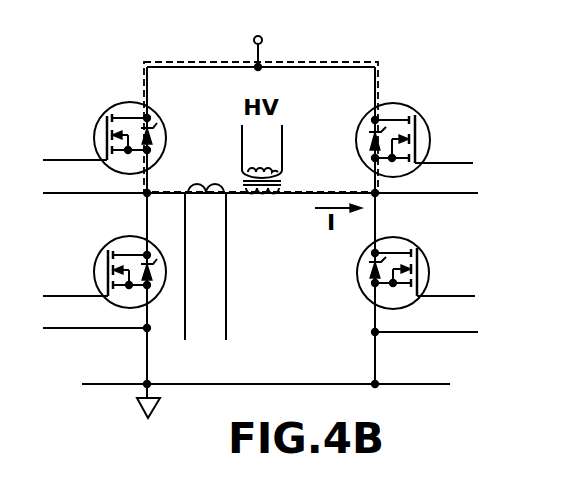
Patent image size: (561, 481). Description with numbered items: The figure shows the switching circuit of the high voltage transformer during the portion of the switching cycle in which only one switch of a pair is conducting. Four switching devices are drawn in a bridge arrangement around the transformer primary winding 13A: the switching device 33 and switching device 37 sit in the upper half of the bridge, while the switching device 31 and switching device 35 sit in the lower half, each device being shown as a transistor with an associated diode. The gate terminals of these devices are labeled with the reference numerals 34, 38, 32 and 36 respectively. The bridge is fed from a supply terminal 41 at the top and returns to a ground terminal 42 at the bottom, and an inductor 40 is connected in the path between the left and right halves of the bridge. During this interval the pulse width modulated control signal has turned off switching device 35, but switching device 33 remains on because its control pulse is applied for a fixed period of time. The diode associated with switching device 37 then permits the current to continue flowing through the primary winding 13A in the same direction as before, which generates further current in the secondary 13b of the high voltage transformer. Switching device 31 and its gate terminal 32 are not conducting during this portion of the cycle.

The lower left switching transistor 31 is at (130, 258).
The gate terminal of transistor 31 32 is at (75, 283).
The switching device 33 is at (130, 122).
The gate terminal of transistor 33 34 is at (75, 147).
The switching device 35 is at (393, 259).
The gate terminal of transistor 35 36 is at (446, 282).
The switching device 37 is at (393, 126).
The gate terminal of transistor 37 38 is at (444, 152).
The inductor 40 is at (205, 247).
The supply voltage terminal +V 41 is at (263, 38).
The ground terminal 42 is at (164, 410).
The transformer primary winding 13A is at (266, 213).
The secondary 13b is at (259, 155).